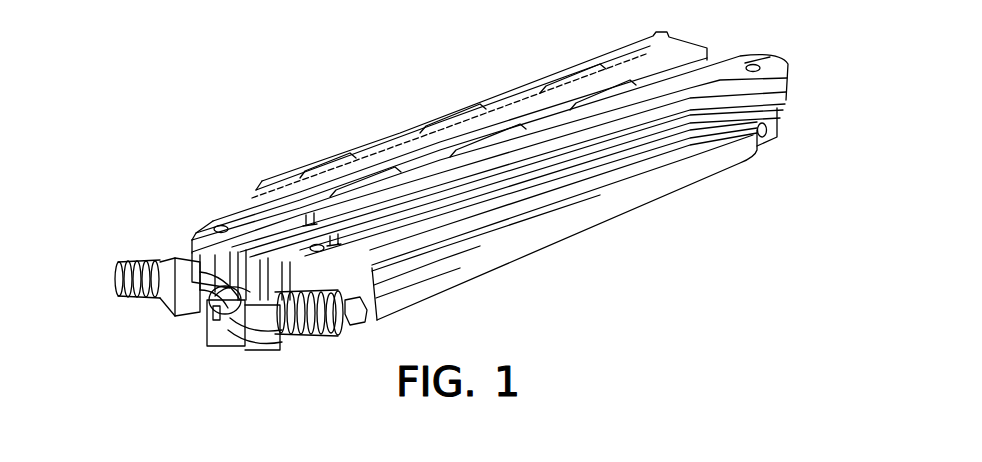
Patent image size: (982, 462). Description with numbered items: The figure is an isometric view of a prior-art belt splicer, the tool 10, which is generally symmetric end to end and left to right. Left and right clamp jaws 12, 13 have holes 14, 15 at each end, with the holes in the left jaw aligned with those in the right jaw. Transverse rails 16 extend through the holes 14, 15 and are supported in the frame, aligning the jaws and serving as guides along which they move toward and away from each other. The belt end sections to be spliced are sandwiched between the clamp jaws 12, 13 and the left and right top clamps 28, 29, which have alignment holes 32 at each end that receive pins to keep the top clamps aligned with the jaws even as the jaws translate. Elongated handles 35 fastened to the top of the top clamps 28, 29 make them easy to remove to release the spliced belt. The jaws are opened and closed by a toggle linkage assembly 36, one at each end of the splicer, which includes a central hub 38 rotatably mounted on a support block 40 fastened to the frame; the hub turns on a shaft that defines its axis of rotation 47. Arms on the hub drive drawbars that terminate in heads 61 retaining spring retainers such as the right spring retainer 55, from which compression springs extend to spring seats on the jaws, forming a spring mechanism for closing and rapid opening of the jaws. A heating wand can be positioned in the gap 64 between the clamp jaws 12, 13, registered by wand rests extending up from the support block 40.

The tool 10 is at (285, 76).
The left clamp jaw 12 is at (186, 252).
The right clamp jaw 13 is at (390, 283).
The holes 14 is at (347, 346).
The holes 15 is at (764, 138).
The transverse rails 16 is at (357, 317).
The left top clamp 28 is at (210, 220).
The right top clamp 29 is at (853, 37).
The alignment holes 32 is at (222, 224).
The elongated handles 35 is at (610, 56).
The toggle linkage assembly 36 is at (192, 335).
The central hub 38 is at (230, 345).
The support block 40 is at (257, 347).
The axis of rotation 47 is at (187, 317).
The right spring retainer 55 is at (313, 340).
The heads 61 is at (327, 337).
The gap 64 is at (310, 218).